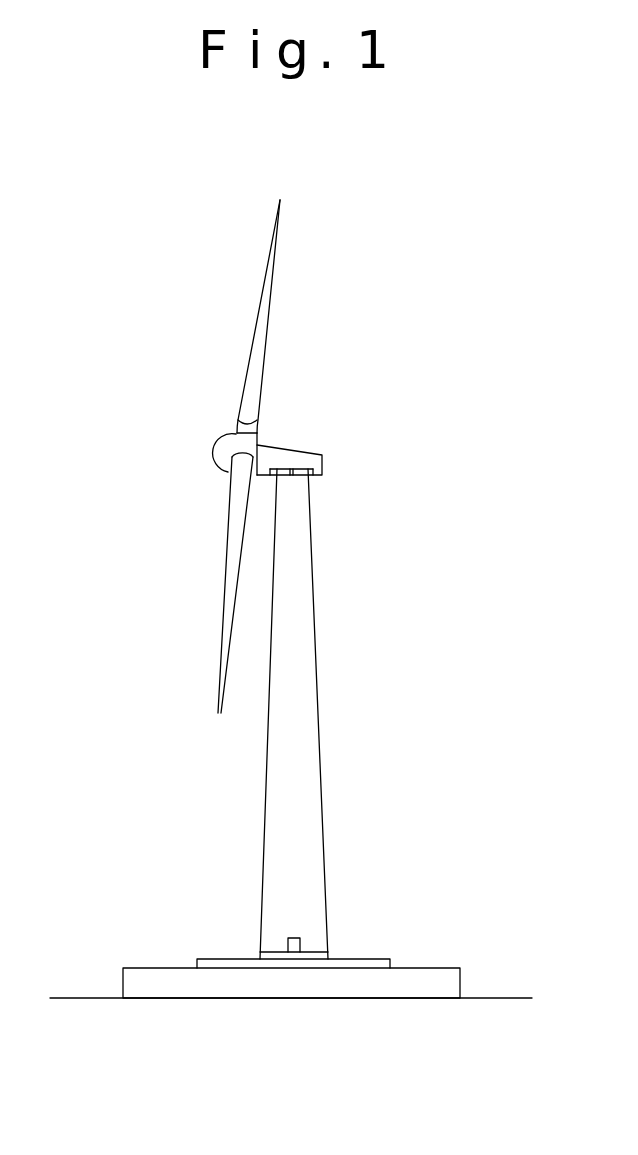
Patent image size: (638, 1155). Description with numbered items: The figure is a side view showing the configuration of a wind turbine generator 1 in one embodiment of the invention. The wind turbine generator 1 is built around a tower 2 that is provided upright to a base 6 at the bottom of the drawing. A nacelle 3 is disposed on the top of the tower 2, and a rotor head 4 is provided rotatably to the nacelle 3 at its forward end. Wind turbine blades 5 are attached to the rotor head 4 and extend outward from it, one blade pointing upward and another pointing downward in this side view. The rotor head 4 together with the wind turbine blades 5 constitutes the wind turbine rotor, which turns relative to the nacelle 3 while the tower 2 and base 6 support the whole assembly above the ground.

The wind turbine generator 1 is at (480, 388).
The tower 2 is at (315, 656).
The nacelle 3 is at (300, 447).
The rotor head 4 is at (212, 450).
The wind turbine blades 5 is at (258, 305).
The base 6 is at (422, 977).